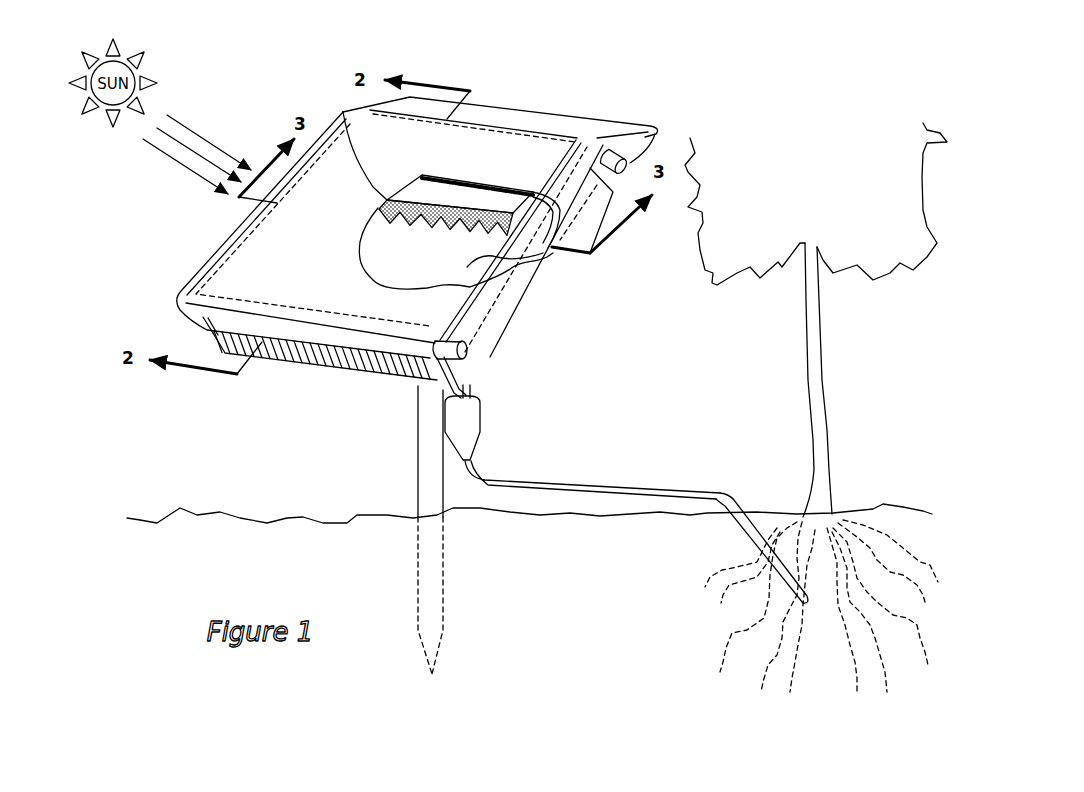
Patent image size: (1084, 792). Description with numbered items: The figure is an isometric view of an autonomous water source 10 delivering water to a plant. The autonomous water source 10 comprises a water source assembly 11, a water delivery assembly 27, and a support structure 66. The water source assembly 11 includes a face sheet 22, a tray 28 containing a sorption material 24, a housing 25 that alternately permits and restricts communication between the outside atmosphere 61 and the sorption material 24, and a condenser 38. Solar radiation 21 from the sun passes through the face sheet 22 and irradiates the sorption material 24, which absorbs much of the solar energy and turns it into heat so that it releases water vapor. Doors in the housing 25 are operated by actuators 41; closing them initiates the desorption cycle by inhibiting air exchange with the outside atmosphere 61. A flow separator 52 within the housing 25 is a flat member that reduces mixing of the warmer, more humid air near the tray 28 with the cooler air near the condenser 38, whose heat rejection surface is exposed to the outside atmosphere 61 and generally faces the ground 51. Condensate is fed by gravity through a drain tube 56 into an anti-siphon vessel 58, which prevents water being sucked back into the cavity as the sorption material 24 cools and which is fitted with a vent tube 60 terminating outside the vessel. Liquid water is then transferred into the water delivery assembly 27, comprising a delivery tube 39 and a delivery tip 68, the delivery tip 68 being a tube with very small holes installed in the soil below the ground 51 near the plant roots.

The autonomous water source 10 is at (280, 128).
The water source assembly 11 is at (182, 284).
The solar radiation 21 is at (187, 165).
The face sheet 22 is at (230, 272).
The sorption material 24 is at (343, 112).
The housing 25 is at (200, 329).
The water delivery assembly 27 is at (576, 476).
The tray 28 is at (459, 194).
The condenser 38 is at (299, 360).
The delivery tube 39 is at (675, 488).
The actuators 41 is at (628, 170).
The ground 51 is at (529, 531).
The flow separator 52 is at (547, 252).
The drain tube 56 is at (445, 397).
The anti-siphon vessel 58 is at (482, 433).
The vent tube 60 is at (471, 396).
The outside atmosphere 61 is at (353, 265).
The support structure 66 is at (418, 437).
The delivery tip 68 is at (758, 528).